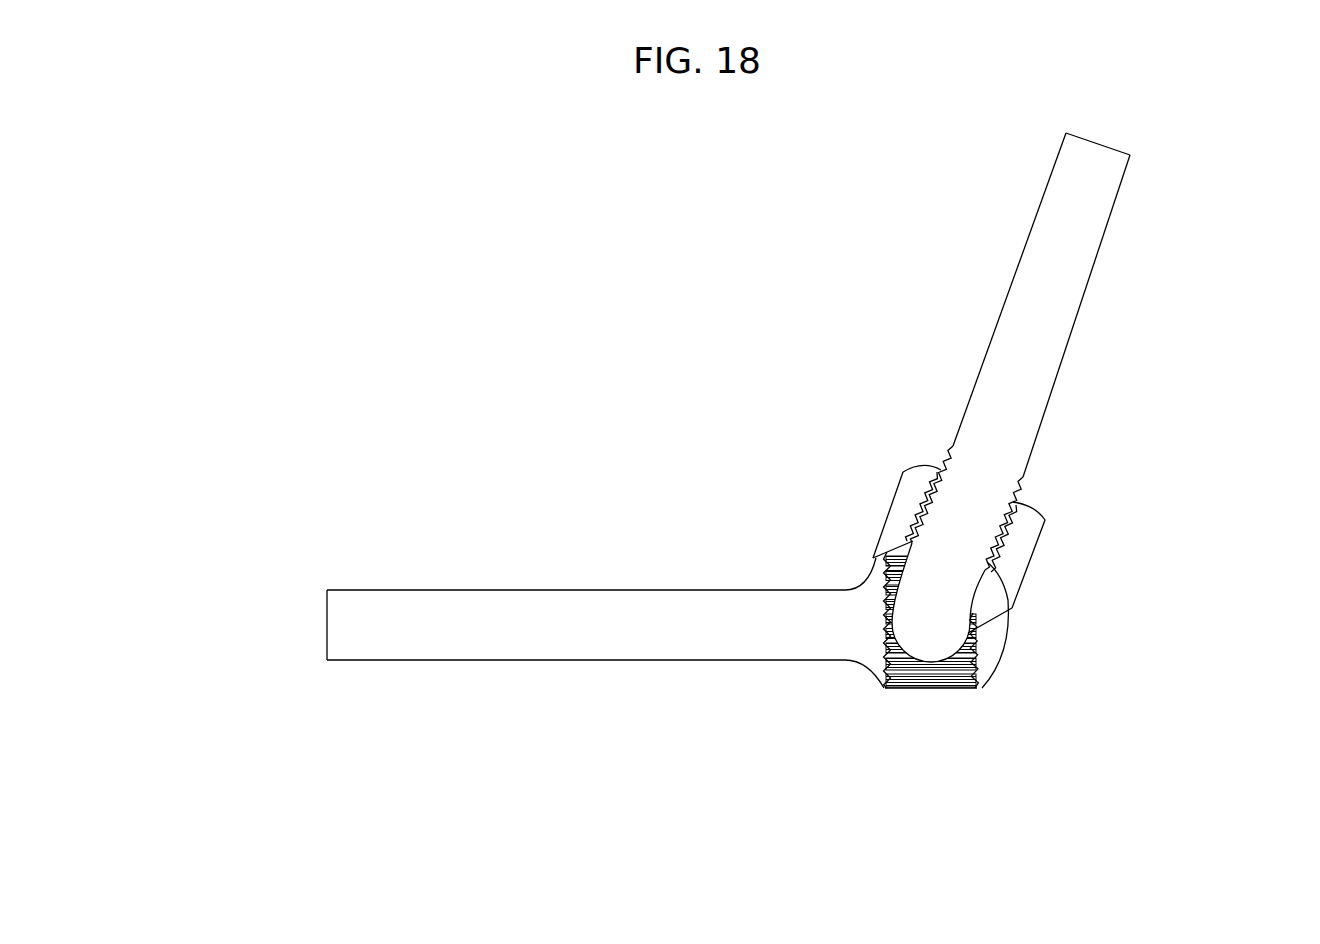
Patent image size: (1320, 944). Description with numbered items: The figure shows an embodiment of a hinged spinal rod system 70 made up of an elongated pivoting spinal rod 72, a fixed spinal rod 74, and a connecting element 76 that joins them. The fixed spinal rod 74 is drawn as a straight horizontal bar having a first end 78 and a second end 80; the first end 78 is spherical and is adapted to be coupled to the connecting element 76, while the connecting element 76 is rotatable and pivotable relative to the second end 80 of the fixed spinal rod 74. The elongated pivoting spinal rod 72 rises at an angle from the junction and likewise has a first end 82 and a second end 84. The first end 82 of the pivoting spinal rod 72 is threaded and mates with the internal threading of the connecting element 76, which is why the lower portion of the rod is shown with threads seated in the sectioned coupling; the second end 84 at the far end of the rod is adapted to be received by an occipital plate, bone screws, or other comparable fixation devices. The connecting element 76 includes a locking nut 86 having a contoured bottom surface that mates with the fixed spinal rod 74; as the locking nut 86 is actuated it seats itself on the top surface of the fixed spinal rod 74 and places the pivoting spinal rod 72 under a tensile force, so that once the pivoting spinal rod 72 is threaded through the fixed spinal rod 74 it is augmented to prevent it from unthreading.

The hinged spinal rod system 70 is at (732, 375).
The elongated pivoting spinal rod 72 is at (1097, 379).
The fixed spinal rod 74 is at (530, 703).
The connecting element 76 is at (1053, 510).
The first end 78 is at (870, 660).
The second end 80 is at (348, 645).
The first end 82 is at (935, 587).
The second end 84 is at (1100, 177).
The locking nut 86 is at (907, 482).